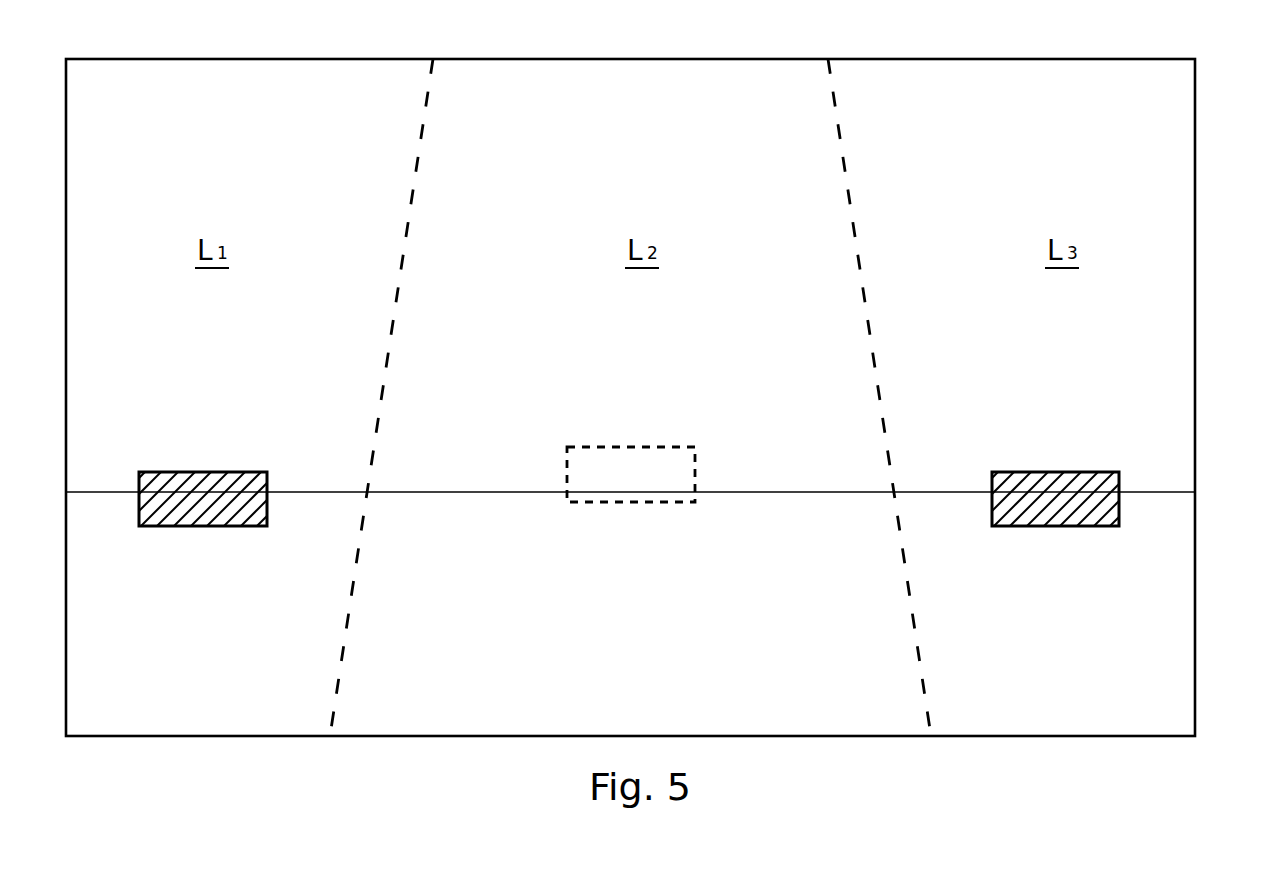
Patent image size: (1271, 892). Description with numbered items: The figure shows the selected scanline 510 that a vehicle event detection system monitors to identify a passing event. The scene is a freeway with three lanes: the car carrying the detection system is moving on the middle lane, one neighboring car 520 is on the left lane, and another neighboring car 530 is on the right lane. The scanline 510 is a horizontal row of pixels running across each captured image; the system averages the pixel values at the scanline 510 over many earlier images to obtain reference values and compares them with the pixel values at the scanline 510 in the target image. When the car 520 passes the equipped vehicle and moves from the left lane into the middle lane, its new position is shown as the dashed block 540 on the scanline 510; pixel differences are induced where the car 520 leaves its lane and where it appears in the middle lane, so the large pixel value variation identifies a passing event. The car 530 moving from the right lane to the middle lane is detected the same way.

The scanline 510 is at (1164, 484).
The car 520 is at (201, 472).
The car 530 is at (1055, 472).
The intermediate element (dashed) 540 is at (625, 447).